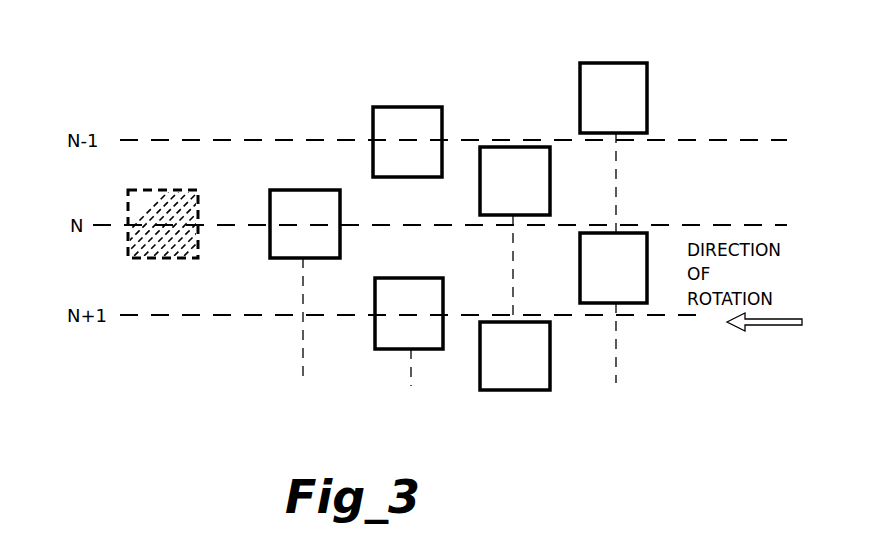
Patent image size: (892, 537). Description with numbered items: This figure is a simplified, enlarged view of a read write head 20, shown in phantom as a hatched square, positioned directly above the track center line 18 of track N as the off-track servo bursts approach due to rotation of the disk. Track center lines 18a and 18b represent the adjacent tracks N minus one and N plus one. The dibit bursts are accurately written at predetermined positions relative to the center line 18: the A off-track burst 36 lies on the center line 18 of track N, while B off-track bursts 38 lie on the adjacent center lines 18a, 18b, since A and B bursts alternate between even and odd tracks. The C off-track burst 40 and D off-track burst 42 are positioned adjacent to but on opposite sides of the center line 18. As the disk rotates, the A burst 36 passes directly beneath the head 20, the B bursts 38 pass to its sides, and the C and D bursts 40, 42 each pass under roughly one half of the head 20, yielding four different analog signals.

The track center line 18 is at (680, 223).
The track center line 18a is at (158, 140).
The track center line 18b is at (193, 322).
The head 20 is at (163, 190).
The A off-track burst 36 is at (300, 190).
The B off-track burst 38 is at (438, 62).
The C off-track burst 40 is at (527, 147).
The D off-track burst 42 is at (648, 72).